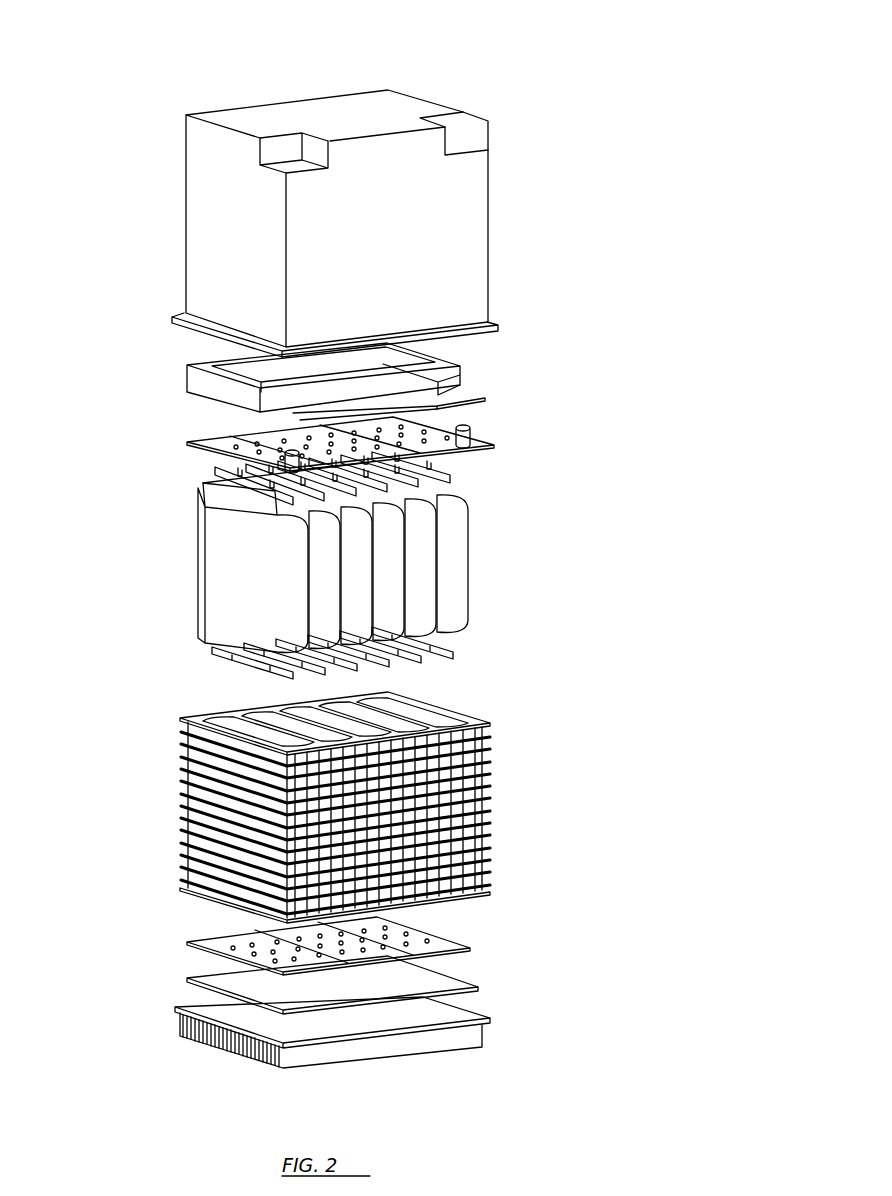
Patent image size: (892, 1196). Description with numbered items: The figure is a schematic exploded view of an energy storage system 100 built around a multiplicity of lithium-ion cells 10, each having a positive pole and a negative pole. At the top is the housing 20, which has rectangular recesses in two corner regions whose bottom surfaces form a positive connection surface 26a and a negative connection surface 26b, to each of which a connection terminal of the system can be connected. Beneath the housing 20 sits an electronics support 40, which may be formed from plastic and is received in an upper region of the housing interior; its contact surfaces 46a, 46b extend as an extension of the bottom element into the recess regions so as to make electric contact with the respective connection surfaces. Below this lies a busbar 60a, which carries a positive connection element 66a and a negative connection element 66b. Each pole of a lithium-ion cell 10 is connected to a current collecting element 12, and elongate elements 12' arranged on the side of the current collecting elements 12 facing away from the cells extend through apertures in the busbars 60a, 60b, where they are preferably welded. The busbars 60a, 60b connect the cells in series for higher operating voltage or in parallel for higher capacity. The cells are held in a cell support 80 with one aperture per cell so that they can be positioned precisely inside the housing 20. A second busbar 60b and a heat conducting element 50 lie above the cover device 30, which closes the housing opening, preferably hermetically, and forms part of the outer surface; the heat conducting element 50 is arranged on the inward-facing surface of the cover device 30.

The energy storage system 100 is at (76, 73).
The housing 20 is at (508, 112).
The positive connection surface 26a is at (237, 102).
The negative connection surface 26b is at (319, 93).
The electronics support 40 is at (546, 344).
The contact surface 46a is at (207, 433).
The contact surface 46b is at (328, 403).
The busbar 60a is at (534, 398).
The positive connection element 66a is at (551, 429).
The negative connection element 66b is at (481, 444).
The lithium-ion cell 10 is at (520, 499).
The current collecting element 12 is at (272, 571).
The elongate element 12' is at (276, 478).
The cell support 80 is at (552, 712).
The busbar 60b is at (534, 903).
The heat conducting element 50 is at (168, 947).
The cover device 30 is at (534, 992).